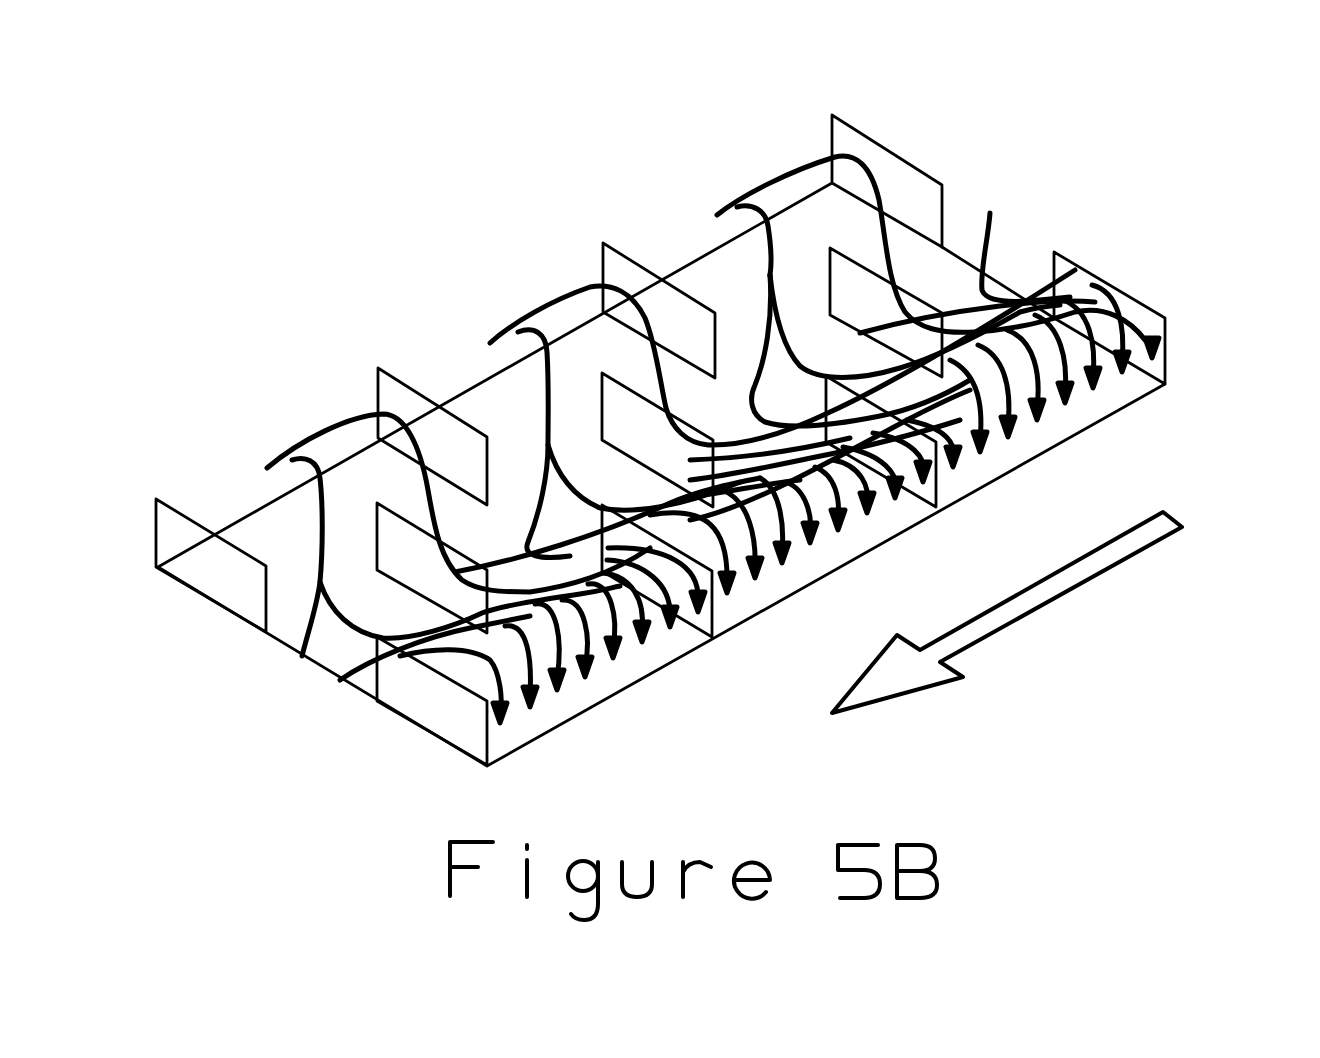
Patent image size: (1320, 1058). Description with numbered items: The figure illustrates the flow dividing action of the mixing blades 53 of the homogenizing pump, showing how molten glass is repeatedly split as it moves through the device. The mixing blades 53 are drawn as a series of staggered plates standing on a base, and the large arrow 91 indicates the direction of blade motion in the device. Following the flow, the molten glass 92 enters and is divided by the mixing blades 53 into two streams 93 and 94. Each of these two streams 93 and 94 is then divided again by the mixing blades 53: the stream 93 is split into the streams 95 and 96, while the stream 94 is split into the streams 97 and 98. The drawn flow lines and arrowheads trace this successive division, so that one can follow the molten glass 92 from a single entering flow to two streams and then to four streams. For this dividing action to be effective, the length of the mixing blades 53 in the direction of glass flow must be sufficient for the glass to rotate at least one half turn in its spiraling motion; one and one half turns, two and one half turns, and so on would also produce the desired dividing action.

The mixing blades 53 is at (601, 243).
The large arrow 91 is at (1044, 615).
The molten glass 92 is at (770, 270).
The stream 93 is at (750, 350).
The stream 94 is at (793, 345).
The stream 95 is at (823, 560).
The stream 96 is at (928, 487).
The stream 97 is at (985, 458).
The stream 98 is at (1107, 400).